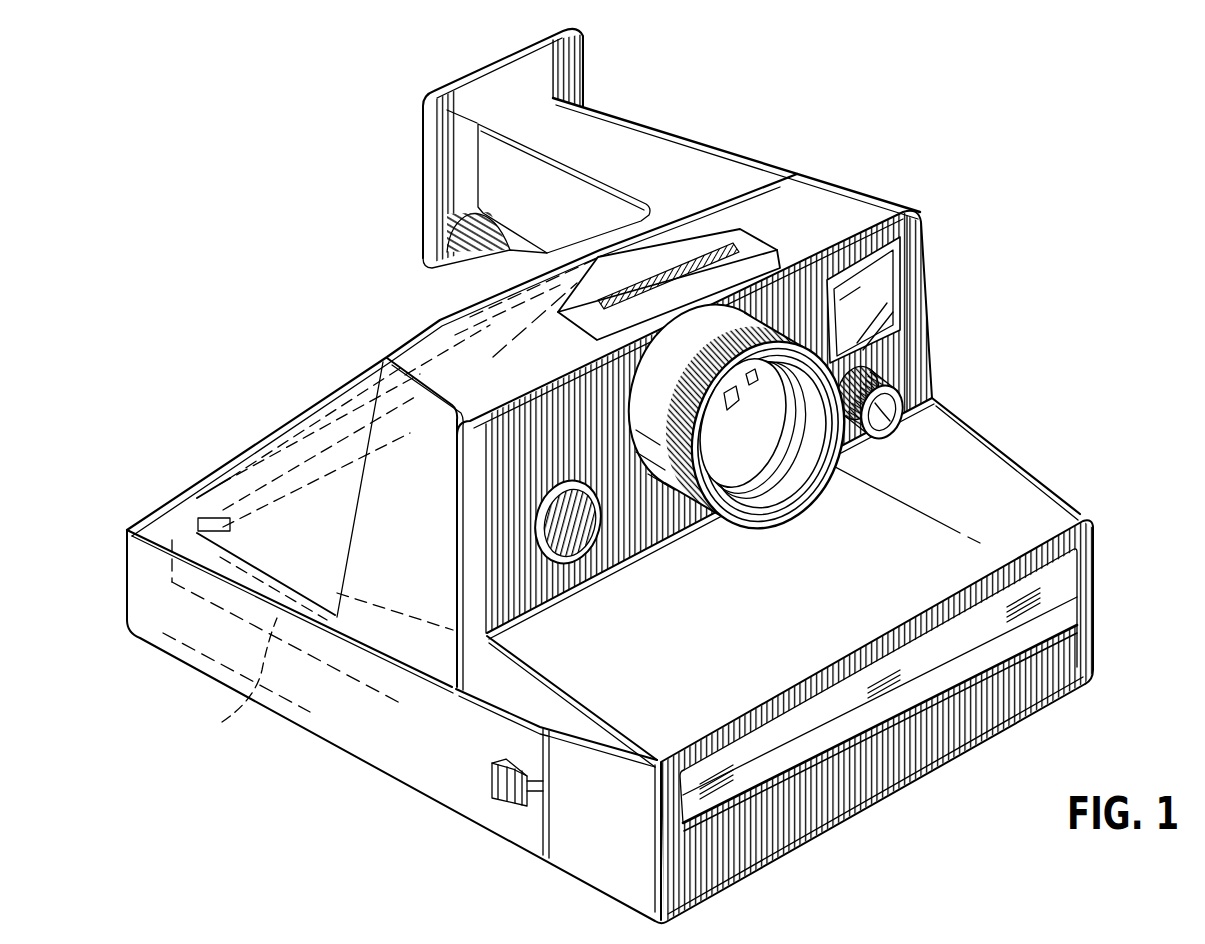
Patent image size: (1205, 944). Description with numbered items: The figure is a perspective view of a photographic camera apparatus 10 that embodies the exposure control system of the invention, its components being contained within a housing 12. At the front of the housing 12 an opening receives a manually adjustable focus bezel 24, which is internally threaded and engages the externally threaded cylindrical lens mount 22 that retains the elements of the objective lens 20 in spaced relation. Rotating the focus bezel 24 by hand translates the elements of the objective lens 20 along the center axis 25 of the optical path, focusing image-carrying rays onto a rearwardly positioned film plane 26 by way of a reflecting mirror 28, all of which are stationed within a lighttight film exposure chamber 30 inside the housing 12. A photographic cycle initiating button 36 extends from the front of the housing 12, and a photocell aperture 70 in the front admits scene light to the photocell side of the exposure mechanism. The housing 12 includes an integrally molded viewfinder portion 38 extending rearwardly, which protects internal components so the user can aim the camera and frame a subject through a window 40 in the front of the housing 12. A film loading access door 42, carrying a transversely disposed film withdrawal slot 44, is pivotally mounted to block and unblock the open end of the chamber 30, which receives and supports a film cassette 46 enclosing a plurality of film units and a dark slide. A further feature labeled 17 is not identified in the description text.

The photographic camera apparatus 10 is at (1016, 446).
The housing 12 is at (1053, 475).
The housing rear wall edge 17 is at (1073, 498).
The objective lens 20 is at (750, 453).
The cylindrical lens mount 22 is at (785, 391).
The focus bezel 24 is at (695, 450).
The center axis 25 is at (934, 518).
The film plane 26 is at (333, 530).
The reflecting mirror 28 is at (322, 427).
The film exposure chamber 30 is at (420, 490).
The photographic cycle initiating button 36 is at (578, 558).
The viewfinder portion 38 is at (685, 131).
The window 40 is at (897, 282).
The film loading access door 42 is at (600, 877).
The film withdrawal slot 44 is at (893, 720).
The film cassette 46 is at (224, 721).
The photocell aperture 70 is at (927, 393).